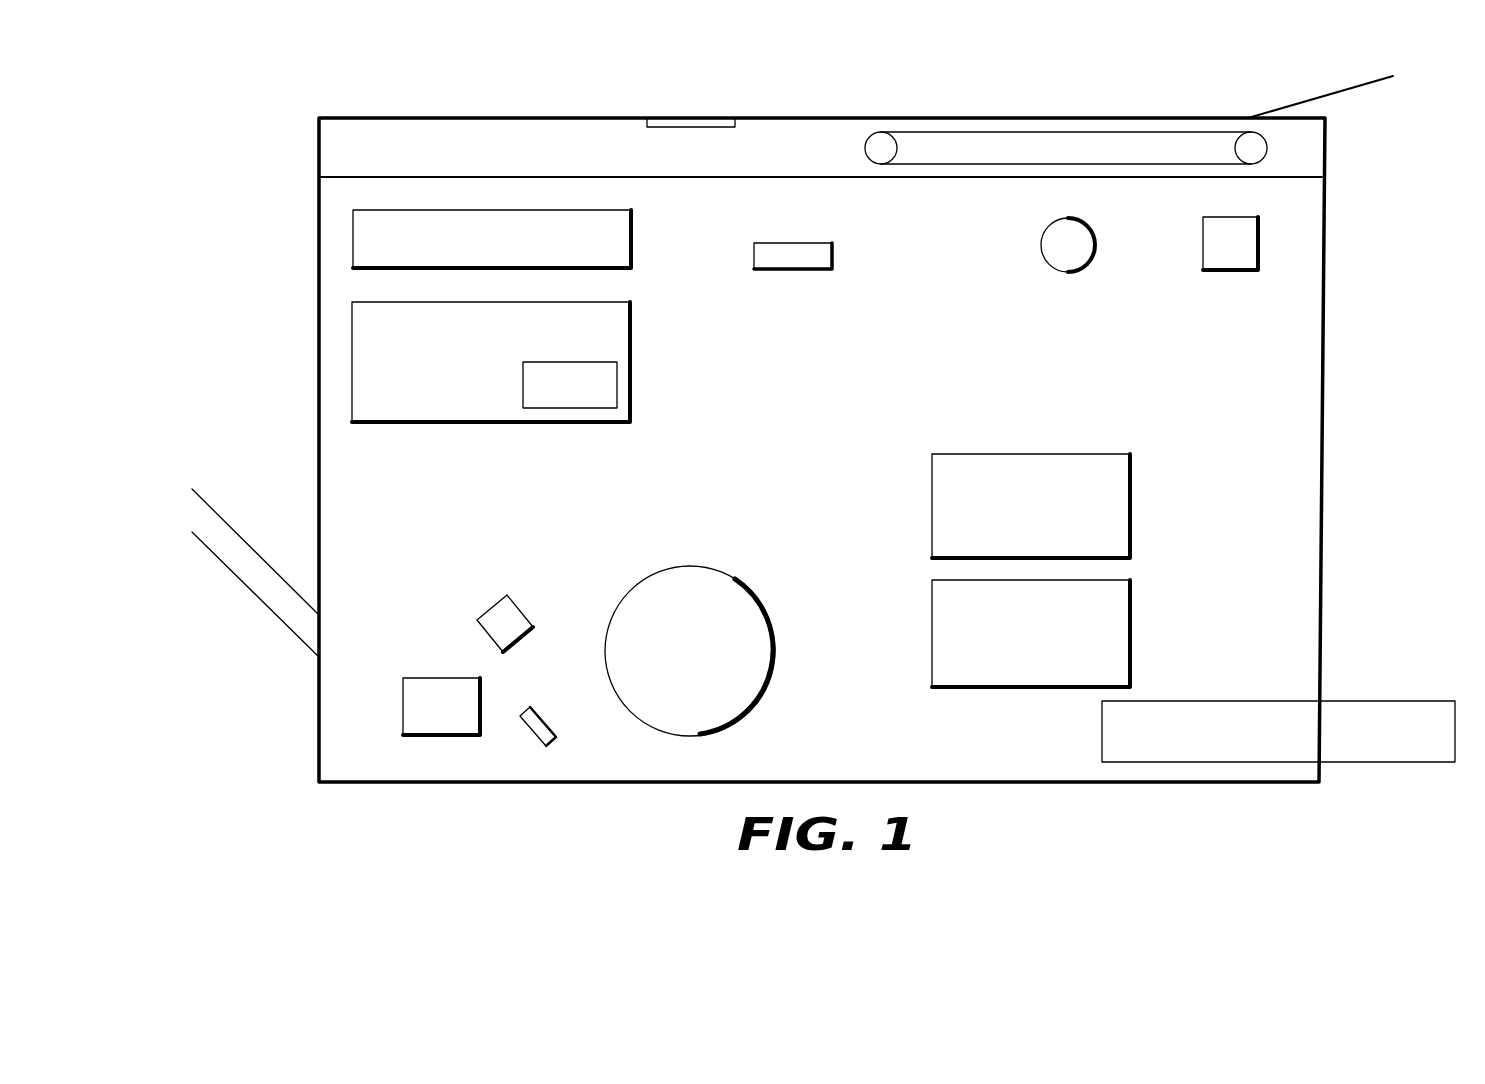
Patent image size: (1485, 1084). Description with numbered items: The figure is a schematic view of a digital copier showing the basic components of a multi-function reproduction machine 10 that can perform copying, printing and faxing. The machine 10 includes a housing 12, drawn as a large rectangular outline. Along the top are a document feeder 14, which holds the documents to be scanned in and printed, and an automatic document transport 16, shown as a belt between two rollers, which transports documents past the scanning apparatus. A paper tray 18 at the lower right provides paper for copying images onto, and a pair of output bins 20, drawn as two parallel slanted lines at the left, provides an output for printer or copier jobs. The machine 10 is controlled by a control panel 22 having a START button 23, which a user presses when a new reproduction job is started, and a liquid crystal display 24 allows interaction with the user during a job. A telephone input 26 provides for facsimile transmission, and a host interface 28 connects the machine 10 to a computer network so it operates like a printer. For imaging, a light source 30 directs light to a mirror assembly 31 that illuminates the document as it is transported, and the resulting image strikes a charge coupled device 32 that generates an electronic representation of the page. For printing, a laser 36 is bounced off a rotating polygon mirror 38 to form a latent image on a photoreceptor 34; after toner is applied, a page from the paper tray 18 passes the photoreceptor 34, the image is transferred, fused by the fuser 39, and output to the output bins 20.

The multi-function reproduction machine 10 is at (466, 108).
The housing 12 is at (318, 282).
The document feeder 14 is at (1352, 90).
The automatic document transport 16 is at (1140, 117).
The paper tray 18 is at (1397, 708).
The output bins 20 is at (226, 523).
The control panel 22 is at (631, 360).
The START button 23 is at (560, 405).
The liquid crystal display 24 is at (622, 238).
The telephone input 26 is at (1120, 506).
The host interface 28 is at (1118, 633).
The light source 30 is at (1070, 262).
The mirror assembly 31 is at (1233, 263).
The charge coupled device 32 is at (808, 262).
The photoreceptor 34 is at (650, 583).
The laser 36 is at (553, 738).
The polygon mirror 38 is at (497, 612).
The fuser 39 is at (427, 688).